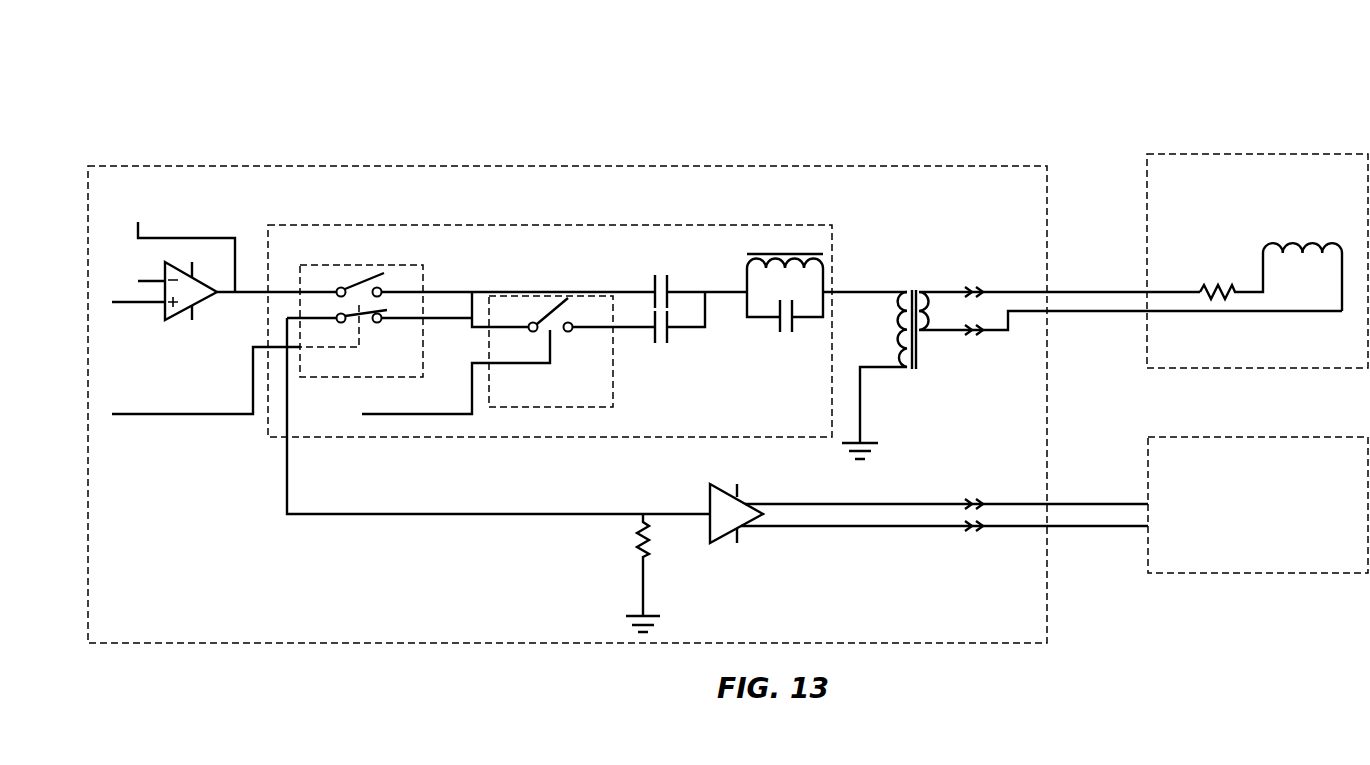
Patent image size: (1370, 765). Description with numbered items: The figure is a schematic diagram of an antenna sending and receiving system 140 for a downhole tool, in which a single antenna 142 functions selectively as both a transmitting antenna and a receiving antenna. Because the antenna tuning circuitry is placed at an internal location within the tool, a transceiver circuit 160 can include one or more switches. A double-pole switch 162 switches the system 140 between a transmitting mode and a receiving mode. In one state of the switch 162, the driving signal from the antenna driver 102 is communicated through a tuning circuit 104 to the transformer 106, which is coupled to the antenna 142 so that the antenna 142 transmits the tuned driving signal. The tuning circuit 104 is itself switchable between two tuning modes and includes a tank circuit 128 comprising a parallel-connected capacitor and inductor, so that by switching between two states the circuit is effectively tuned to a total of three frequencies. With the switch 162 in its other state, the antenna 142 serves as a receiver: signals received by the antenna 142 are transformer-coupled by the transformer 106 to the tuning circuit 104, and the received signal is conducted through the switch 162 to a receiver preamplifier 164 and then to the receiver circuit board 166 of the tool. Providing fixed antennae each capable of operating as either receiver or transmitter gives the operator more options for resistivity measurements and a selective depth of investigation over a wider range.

The antenna sending and receiving system 140 is at (177, 65).
The transceiver circuit 160 is at (152, 166).
The antenna driver 102 is at (177, 312).
The tuning circuit 104 is at (332, 225).
The double-pole switch 162 is at (360, 377).
The tank circuit 128 is at (613, 371).
The transformer 106 is at (930, 353).
The antenna 142 is at (1210, 154).
The receiver preamplifier 164 is at (725, 535).
The receiver circuit board 166 is at (1210, 437).